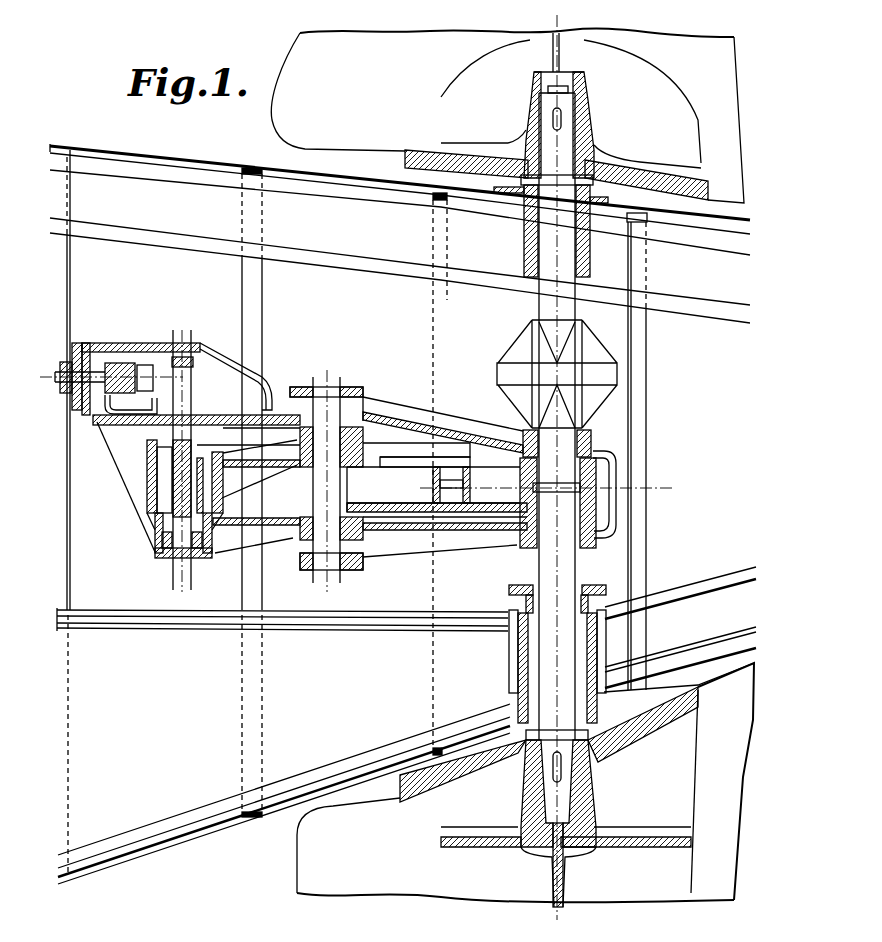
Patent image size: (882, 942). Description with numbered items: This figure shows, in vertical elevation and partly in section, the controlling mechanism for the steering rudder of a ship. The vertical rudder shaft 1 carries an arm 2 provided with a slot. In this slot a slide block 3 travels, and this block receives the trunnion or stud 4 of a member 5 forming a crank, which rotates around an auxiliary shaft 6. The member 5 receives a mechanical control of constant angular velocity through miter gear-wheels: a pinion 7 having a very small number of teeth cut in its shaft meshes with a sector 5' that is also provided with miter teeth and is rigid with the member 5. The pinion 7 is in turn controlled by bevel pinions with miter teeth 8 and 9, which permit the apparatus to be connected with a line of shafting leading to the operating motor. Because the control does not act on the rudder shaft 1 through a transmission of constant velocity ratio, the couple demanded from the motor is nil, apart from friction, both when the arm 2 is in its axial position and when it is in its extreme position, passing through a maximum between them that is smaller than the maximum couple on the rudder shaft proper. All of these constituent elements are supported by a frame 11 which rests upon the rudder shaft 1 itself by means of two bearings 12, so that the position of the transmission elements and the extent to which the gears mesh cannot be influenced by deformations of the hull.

The rudder shaft 1 is at (568, 567).
The arm 2 is at (478, 483).
The slide block 3 is at (433, 480).
The trunnion or stud 4 is at (448, 490).
The member forming a crank 5 is at (425, 426).
The sector 5' is at (232, 488).
The auxiliary shaft 6 is at (358, 557).
The pinion 7 is at (177, 480).
The bevel pinion 8 is at (243, 380).
The bevel pinion 9 is at (123, 362).
The frame 11 is at (243, 547).
The bearing 12 is at (596, 542).